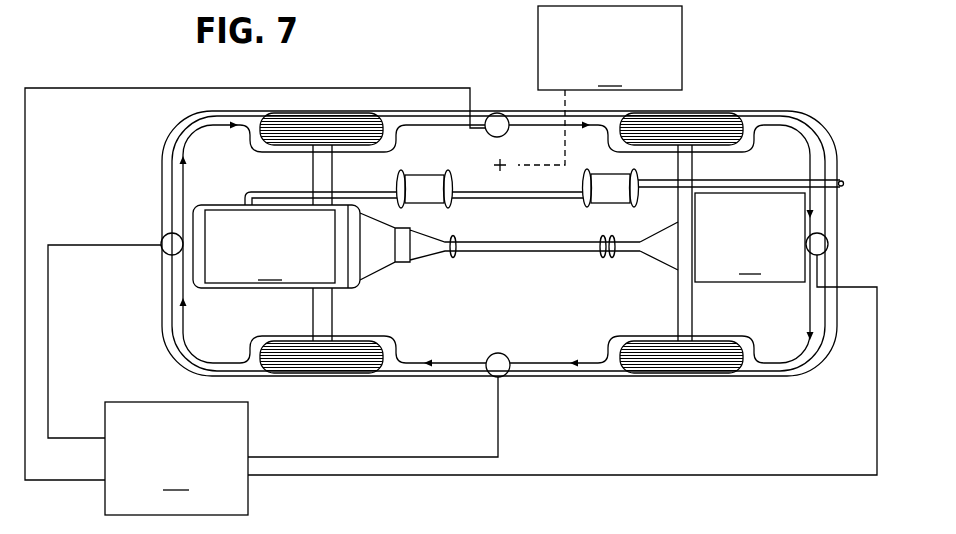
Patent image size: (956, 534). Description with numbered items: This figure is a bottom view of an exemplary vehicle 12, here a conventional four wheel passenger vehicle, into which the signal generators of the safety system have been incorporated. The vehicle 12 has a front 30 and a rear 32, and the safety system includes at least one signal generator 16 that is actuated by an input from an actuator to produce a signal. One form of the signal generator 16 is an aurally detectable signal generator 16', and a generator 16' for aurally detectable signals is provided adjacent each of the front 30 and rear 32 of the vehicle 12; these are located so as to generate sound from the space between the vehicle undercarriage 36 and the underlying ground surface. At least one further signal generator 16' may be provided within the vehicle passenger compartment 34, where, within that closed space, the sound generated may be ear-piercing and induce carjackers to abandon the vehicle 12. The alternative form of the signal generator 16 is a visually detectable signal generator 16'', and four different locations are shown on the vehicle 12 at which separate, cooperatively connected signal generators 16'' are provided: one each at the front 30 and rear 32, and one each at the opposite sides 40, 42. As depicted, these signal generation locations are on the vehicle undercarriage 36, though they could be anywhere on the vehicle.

The vehicle 12 is at (780, 161).
The signal generator 16 is at (750, 237).
The aurally detectable signal generator 16' is at (437, 147).
The visually detectable signal generator 16'' is at (176, 458).
The front 30 is at (158, 277).
The rear 32 is at (846, 243).
The vehicle passenger compartment 34 is at (578, 316).
The vehicle undercarriage 36 is at (445, 327).
The opposite side 40 is at (485, 96).
The opposite side 42 is at (525, 384).